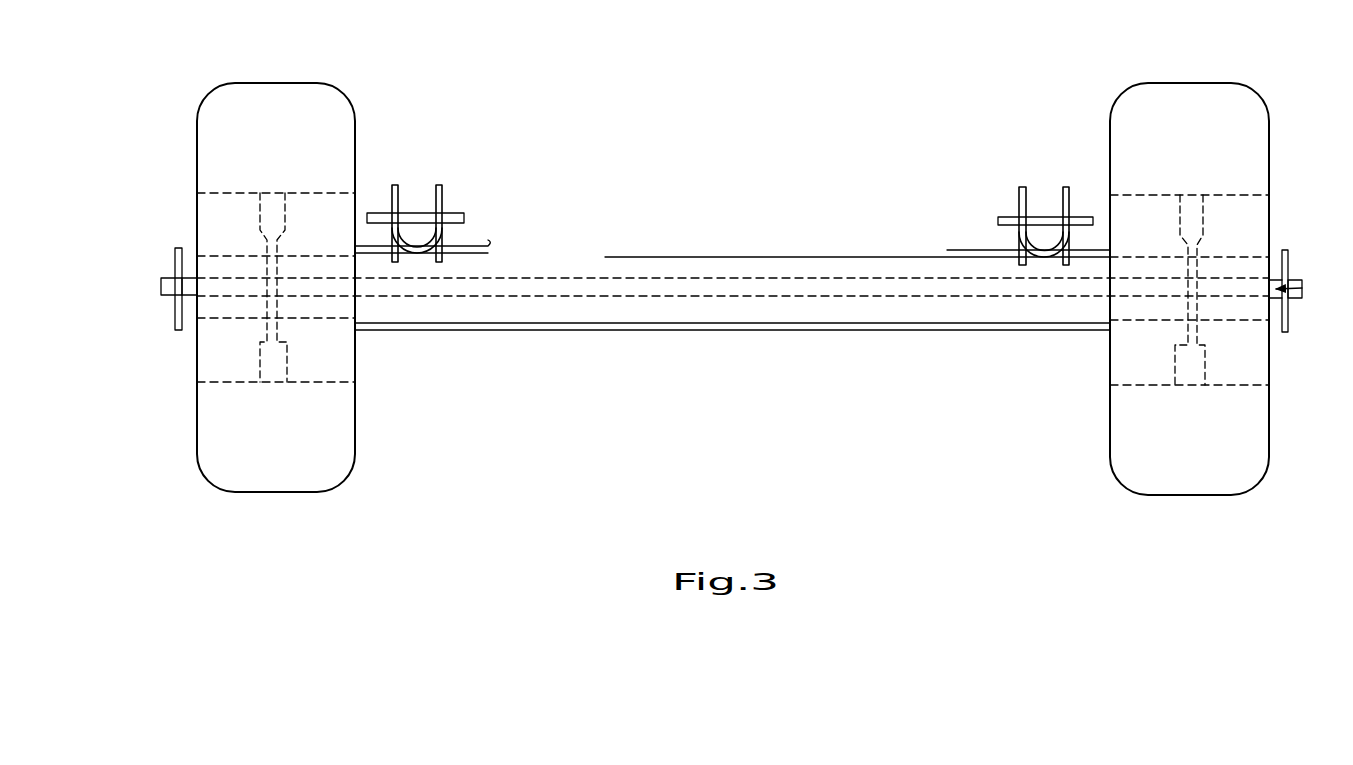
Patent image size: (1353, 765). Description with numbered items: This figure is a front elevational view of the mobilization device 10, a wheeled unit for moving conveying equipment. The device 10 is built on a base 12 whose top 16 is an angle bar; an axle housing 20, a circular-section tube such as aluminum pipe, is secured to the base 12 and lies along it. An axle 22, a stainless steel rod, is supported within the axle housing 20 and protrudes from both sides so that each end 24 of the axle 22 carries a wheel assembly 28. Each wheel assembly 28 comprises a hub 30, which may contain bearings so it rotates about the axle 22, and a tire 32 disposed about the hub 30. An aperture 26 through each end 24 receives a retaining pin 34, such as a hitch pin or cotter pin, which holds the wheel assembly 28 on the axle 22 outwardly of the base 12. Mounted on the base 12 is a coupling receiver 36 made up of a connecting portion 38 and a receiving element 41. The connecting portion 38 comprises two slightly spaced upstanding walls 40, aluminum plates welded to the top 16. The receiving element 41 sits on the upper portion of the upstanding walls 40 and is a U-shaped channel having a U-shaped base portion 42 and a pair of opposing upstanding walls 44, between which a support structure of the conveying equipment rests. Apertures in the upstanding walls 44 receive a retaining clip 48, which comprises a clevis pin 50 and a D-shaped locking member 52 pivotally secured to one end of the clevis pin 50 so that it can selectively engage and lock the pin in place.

The mobilization device 10 is at (855, 145).
The base 12 is at (918, 326).
The top 16 is at (753, 262).
The axle housing 20 is at (604, 277).
The axle 22 is at (238, 275).
The end of the axle 24 is at (162, 276).
The aperture 26 is at (190, 288).
The wheel assembly 28 is at (358, 191).
The hub 30 is at (210, 207).
The tire 32 is at (265, 82).
The retaining pin 34 is at (181, 332).
The coupling receiver 36 is at (390, 199).
The connecting portion 38 is at (457, 312).
The upstanding walls 40 is at (448, 242).
The receiving element 41 is at (459, 206).
The base portion 42 is at (412, 251).
The upstanding walls of the receiving element 44 is at (414, 217).
The retaining clip 48 is at (466, 211).
The clevis pin 50 is at (367, 217).
The D-shaped locking member 52 is at (505, 280).